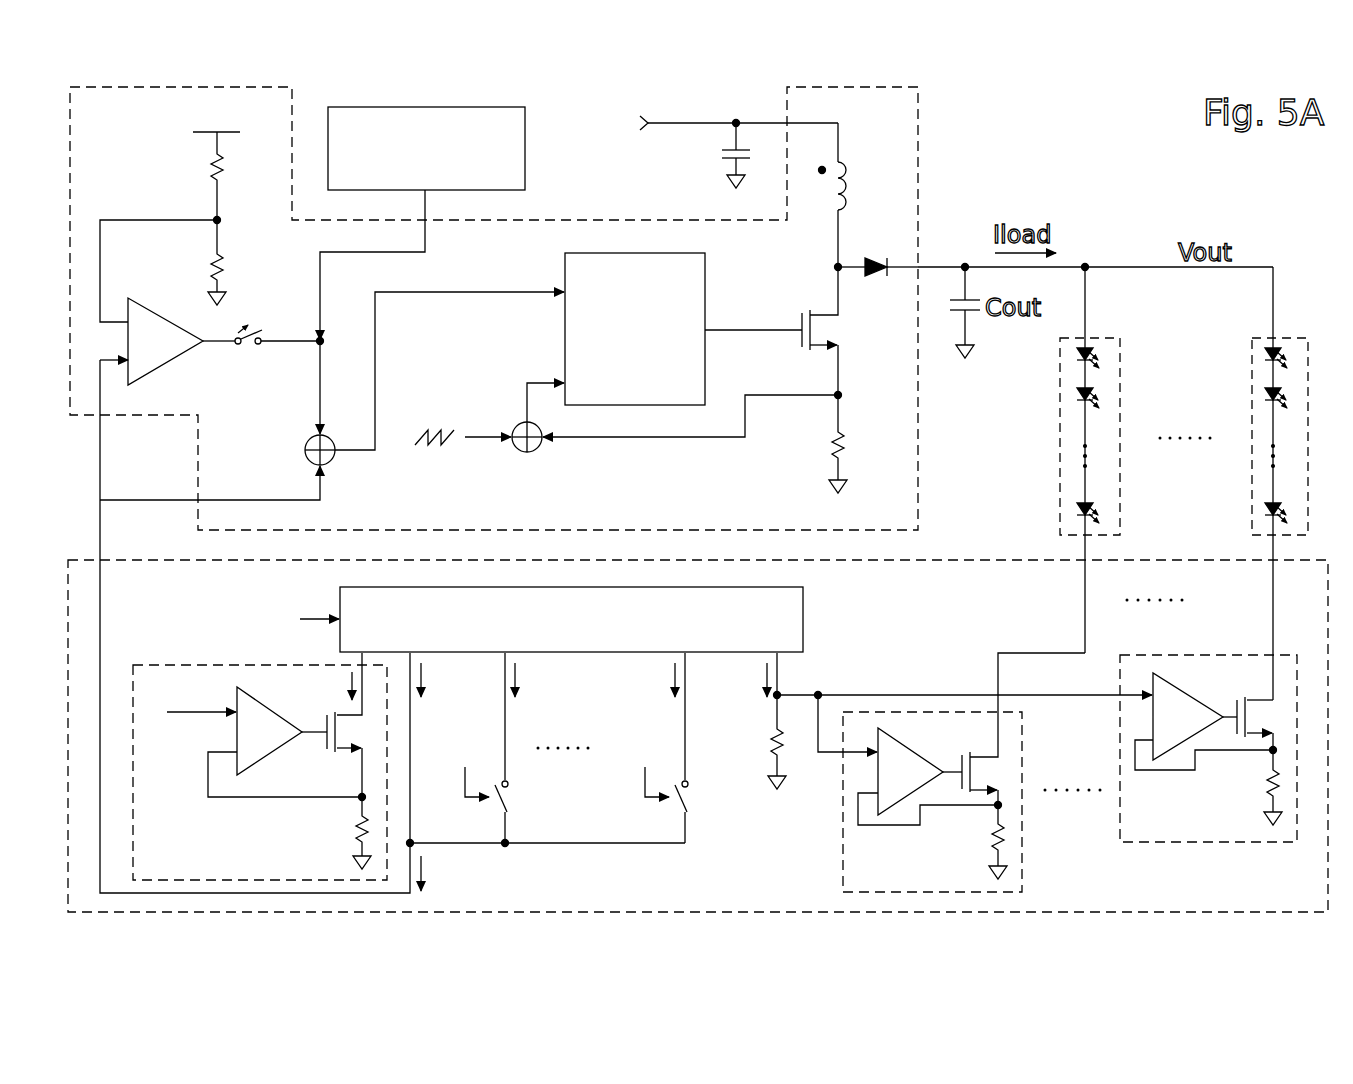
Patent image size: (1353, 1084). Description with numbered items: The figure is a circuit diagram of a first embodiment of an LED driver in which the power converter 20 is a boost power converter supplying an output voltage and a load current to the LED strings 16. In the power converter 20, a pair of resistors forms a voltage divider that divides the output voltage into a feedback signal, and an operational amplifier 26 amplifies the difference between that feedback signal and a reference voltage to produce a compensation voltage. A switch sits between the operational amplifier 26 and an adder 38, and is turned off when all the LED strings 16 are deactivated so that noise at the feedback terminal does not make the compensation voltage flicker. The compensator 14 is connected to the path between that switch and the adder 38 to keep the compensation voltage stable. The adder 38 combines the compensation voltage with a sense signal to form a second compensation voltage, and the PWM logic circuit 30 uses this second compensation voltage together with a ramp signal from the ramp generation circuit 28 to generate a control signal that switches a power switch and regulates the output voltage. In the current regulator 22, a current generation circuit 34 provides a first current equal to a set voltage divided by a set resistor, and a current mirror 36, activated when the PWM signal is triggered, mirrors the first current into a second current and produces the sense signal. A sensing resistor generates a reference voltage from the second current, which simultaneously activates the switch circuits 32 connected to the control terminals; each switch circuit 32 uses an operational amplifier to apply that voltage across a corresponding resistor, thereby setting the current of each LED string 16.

The compensator 14 is at (525, 150).
The PWM logic circuit 30 is at (636, 253).
The operational amplifier 26 is at (155, 313).
The adder 38 is at (305, 450).
The ramp generation circuit 28 is at (540, 448).
The power converter 20 is at (918, 420).
The current regulator 22 is at (985, 560).
The LED strings 16 is at (1120, 385).
The current generation circuit 34 is at (180, 665).
The current mirror 36 is at (803, 620).
The switch circuits 32 is at (1022, 828).